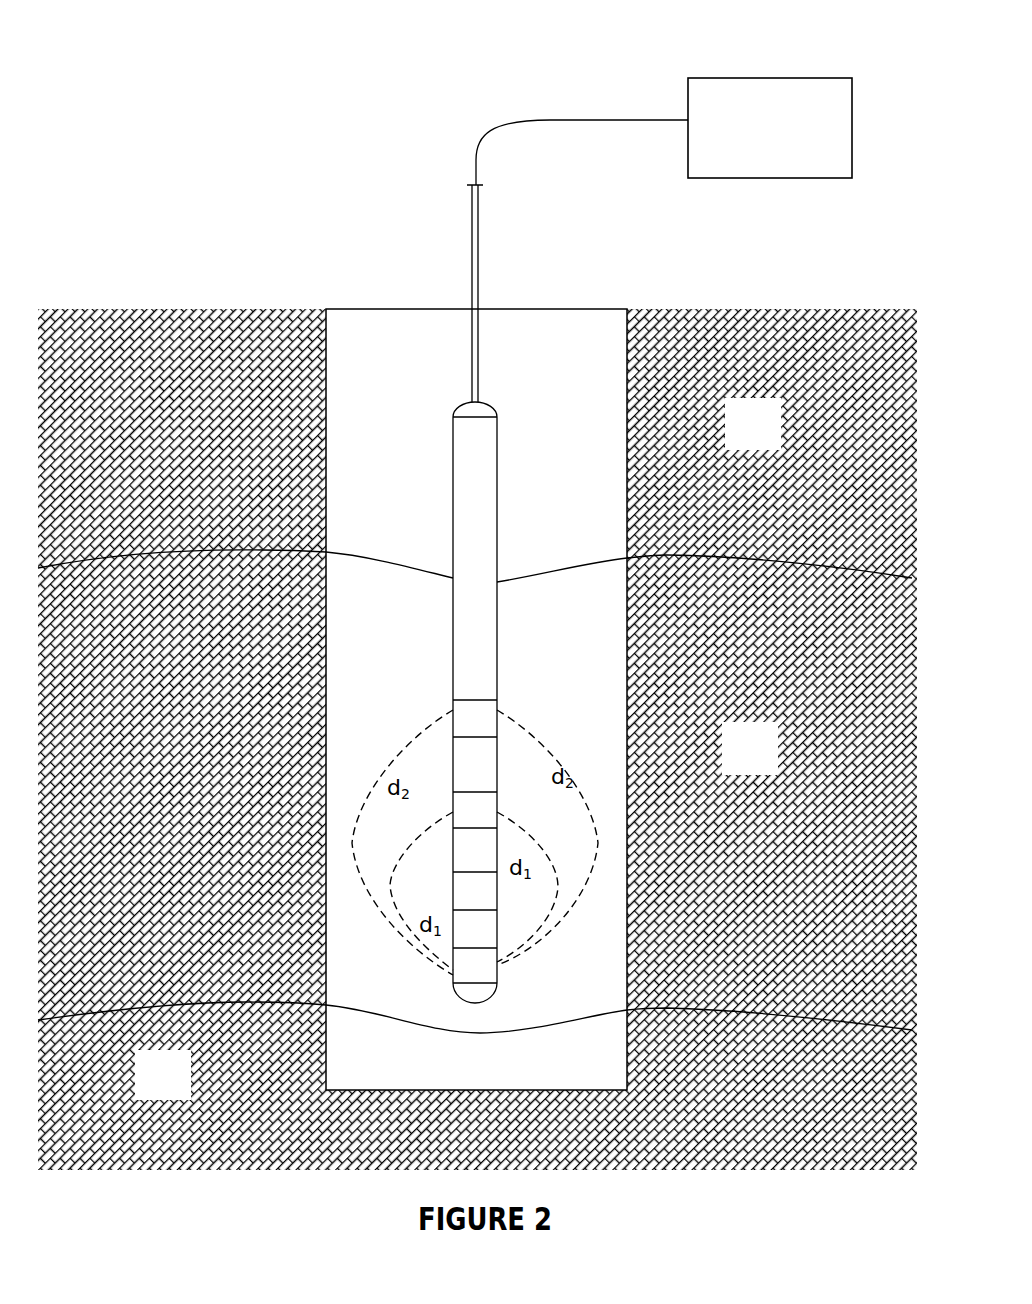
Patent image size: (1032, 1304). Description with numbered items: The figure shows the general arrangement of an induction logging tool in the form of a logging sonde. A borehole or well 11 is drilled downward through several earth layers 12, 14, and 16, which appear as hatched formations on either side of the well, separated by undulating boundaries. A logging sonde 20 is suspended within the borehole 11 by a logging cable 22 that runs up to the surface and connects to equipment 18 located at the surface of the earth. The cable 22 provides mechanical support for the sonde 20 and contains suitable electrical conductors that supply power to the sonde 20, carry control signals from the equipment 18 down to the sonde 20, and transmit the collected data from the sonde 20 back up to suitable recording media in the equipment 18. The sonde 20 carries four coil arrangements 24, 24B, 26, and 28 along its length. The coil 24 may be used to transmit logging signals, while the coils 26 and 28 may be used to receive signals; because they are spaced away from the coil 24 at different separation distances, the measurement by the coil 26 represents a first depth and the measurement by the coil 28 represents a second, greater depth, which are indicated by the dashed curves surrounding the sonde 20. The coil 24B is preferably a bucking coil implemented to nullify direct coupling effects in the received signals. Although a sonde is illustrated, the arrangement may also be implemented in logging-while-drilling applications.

The borehole 11 is at (577, 330).
The earth layer 12 is at (765, 435).
The earth layer 14 is at (762, 758).
The earth layer 16 is at (174, 1085).
The equipment 18 is at (785, 78).
The logging sonde 20 is at (484, 404).
The logging cable 22 is at (472, 224).
The coil 24 is at (462, 978).
The bucking coil 24B is at (456, 902).
The receiving coil 26 is at (462, 823).
The coil 28 is at (462, 730).